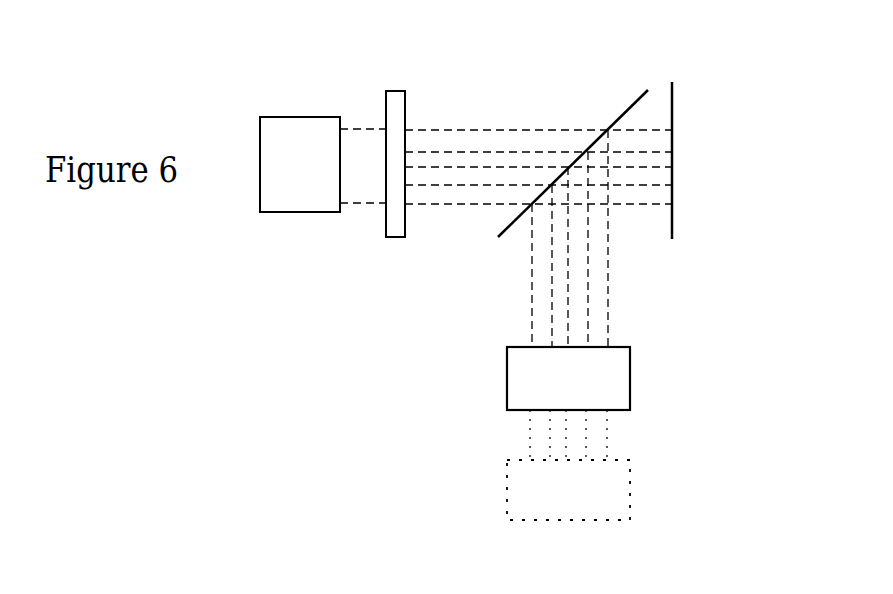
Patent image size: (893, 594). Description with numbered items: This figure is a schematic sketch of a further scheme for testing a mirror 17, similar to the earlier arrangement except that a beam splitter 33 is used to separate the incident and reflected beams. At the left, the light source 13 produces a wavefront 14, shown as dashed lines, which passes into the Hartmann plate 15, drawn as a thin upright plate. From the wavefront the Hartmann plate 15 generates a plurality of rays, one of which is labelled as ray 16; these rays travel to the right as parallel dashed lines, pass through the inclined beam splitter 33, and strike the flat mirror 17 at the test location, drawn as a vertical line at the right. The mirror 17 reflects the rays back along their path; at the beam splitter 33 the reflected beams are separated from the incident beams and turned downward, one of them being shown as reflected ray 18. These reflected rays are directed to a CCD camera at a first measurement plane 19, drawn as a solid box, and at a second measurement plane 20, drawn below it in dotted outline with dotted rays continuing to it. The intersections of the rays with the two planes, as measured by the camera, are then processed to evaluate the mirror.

The light source 13 is at (305, 116).
The wavefront 14 is at (363, 126).
The Hartmann plate 15 is at (393, 238).
The ray 16 is at (458, 127).
The beam splitter 33 is at (628, 108).
The flat mirror 17 is at (672, 173).
The reflected ray 18 is at (531, 304).
The first measurement plane 19 is at (507, 382).
The second measurement plane 20 is at (506, 477).